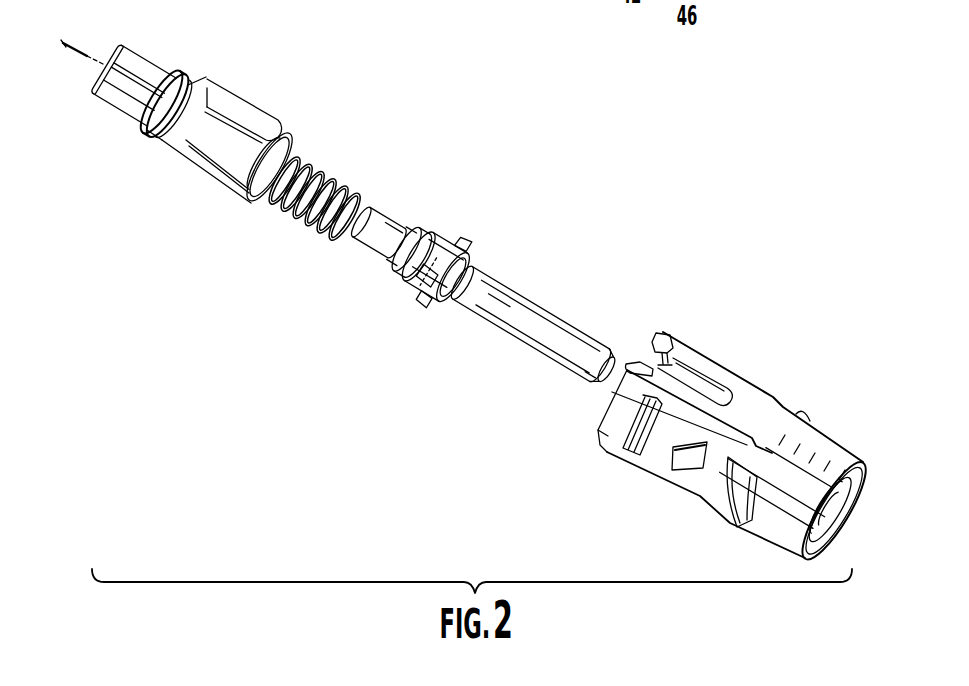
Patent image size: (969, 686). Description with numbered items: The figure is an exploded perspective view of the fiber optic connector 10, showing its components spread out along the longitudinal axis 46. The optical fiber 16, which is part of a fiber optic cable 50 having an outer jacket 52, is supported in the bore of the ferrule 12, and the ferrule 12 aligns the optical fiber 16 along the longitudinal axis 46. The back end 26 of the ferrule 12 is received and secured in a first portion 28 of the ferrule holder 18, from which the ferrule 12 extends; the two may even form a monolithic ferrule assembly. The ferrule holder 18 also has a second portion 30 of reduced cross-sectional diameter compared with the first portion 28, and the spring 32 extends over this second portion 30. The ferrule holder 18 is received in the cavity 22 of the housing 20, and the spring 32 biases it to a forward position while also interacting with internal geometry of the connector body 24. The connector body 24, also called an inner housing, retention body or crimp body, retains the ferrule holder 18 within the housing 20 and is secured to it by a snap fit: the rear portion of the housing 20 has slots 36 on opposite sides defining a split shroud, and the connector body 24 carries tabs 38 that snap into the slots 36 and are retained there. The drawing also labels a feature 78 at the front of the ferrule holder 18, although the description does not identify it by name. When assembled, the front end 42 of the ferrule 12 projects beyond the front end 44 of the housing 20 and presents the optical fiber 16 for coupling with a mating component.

The connector 10 is at (477, 150).
The ferrule 12 is at (582, 313).
The optical fiber 16 is at (80, 47).
The ferrule holder 18 is at (412, 212).
The housing 20 is at (772, 384).
The cavity 22 is at (838, 502).
The connector body 24 is at (206, 72).
The back end 26 is at (478, 270).
The first portion 28 is at (430, 237).
The second portion 30 is at (367, 253).
The spring 32 is at (332, 172).
The slots 36 is at (695, 385).
The tabs 38 is at (253, 100).
The front end 42 is at (612, 390).
The front end 44 is at (866, 463).
The longitudinal axis 46 is at (631, 362).
The fiber optic cable 50 is at (464, 237).
The outer jacket 52 is at (414, 274).
The front shoulder of ferrule holder 78 is at (443, 300).